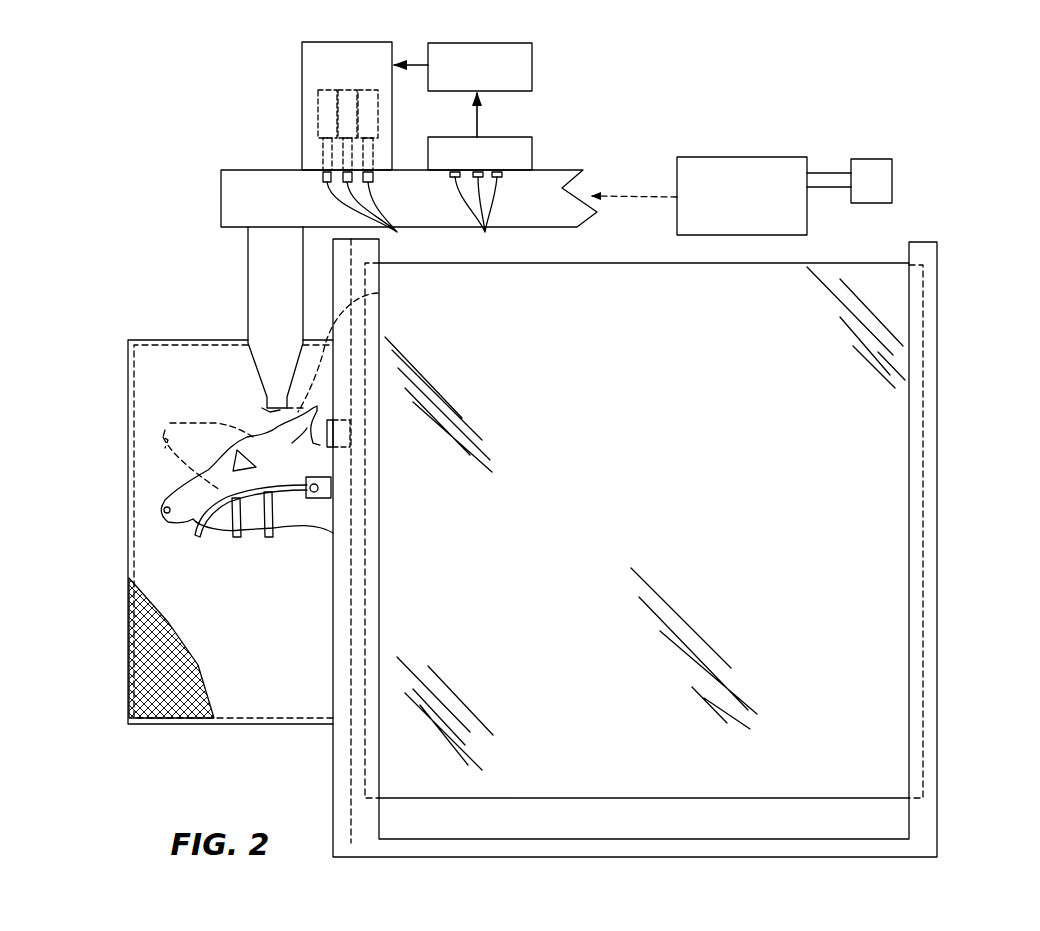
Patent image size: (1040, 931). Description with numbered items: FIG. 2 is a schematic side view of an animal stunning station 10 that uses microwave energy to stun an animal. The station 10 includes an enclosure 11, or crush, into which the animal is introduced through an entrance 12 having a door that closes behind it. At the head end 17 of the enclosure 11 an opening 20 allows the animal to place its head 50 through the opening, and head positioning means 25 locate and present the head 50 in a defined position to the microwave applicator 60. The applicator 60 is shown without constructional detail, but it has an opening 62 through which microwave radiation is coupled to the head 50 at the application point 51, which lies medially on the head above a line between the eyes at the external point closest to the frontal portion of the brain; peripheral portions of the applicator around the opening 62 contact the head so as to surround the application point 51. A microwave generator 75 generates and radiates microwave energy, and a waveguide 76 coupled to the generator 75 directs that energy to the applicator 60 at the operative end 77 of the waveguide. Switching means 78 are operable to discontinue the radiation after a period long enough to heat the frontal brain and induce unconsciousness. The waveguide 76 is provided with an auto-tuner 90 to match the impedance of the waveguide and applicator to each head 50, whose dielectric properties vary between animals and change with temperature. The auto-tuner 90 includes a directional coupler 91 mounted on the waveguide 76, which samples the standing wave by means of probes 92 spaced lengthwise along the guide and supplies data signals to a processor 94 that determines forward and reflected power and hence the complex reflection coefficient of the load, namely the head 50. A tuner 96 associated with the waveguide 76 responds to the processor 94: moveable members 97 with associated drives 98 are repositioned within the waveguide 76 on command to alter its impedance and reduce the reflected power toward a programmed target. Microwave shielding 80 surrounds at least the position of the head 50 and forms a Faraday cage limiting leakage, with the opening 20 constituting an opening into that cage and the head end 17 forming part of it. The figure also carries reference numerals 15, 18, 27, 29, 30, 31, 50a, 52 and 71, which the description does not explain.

The animal stunning station 10 is at (182, 272).
The enclosure 11 is at (785, 400).
The entrance 12 is at (938, 636).
The liquid bath 15 is at (657, 451).
The head end 17 is at (333, 613).
The tank bottom 18 is at (768, 838).
The opening 20 is at (338, 536).
The head positioning means 25 is at (271, 545).
The holder arm 27 is at (227, 522).
The pivot bracket 29 is at (314, 495).
The clamp 30 is at (333, 435).
The clamp contact 31 is at (292, 443).
The animal head 50 is at (163, 483).
The fish body 50a is at (170, 420).
The application point 51 is at (238, 437).
The fish gill region 52 is at (378, 293).
The microwave applicator 60 is at (257, 395).
The applicator opening 62 is at (253, 412).
The support bar 71 is at (221, 201).
The microwave generator 75 is at (728, 207).
The waveguide 76 is at (523, 205).
The operative end 77 is at (403, 207).
The switching means 78 is at (860, 192).
The microwave shielding 80 is at (128, 672).
The auto-tuner 90 is at (570, 102).
The directional coupler 91 is at (517, 155).
The probes 92 is at (476, 214).
The processor 94 is at (502, 80).
The tuner 96 is at (302, 122).
The moveable members 97 is at (370, 214).
The drives 98 is at (368, 90).